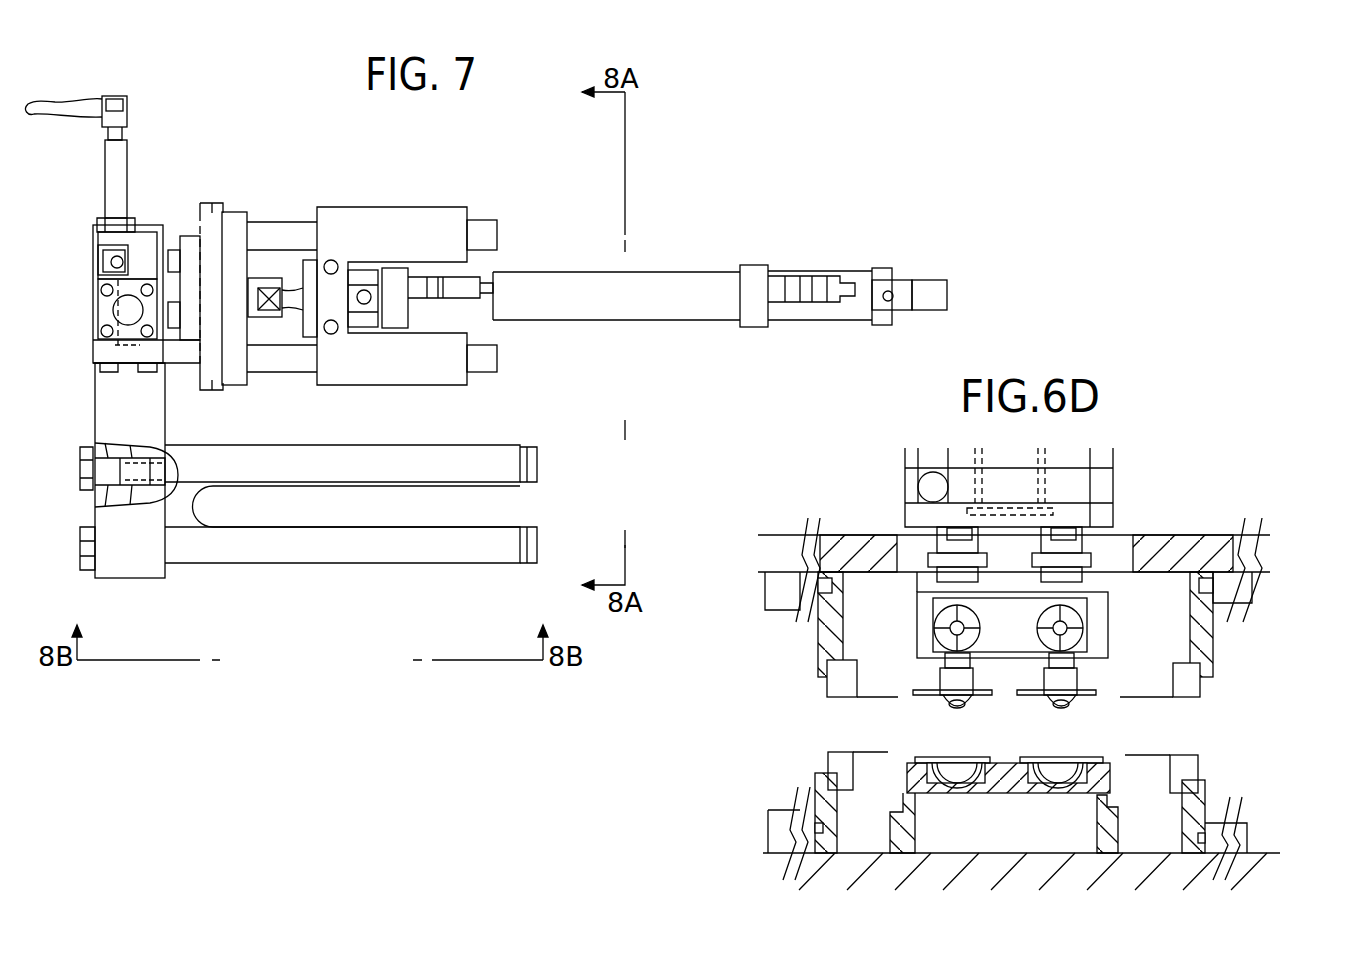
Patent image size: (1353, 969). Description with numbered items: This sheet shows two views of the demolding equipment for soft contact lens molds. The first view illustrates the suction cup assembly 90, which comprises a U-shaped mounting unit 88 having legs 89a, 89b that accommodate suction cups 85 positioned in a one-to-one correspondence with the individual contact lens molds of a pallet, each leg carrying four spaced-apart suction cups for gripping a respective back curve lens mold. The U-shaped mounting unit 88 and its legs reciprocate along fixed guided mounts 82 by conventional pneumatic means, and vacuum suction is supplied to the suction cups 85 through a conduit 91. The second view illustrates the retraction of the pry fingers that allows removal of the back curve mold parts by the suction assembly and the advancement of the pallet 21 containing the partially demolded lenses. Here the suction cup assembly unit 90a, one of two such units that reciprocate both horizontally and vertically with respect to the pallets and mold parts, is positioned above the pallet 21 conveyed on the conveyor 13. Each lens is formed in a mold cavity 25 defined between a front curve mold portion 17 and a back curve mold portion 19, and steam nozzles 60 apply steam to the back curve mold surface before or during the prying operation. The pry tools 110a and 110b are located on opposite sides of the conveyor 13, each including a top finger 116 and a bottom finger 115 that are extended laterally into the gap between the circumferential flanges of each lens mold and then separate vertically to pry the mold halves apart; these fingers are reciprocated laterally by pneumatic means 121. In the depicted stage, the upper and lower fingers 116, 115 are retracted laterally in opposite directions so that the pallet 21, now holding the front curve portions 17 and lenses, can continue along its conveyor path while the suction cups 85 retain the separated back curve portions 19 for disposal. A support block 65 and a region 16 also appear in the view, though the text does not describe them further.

In FIG. 7, the conduit 91 is at (118, 172).
In FIG. 7, the suction cup assembly 90 is at (68, 422).
In FIG. 7, the fixed guided mounts 82 is at (375, 215).
In FIG. 7, the U-shaped mounting unit 88 is at (150, 565).
In FIG. 7, the leg 89a is at (388, 458).
In FIG. 7, the leg 89b is at (385, 548).
In FIG. 6D, the support block 65 is at (1103, 490).
In FIG. 6D, the steam nozzles 60 is at (1057, 548).
In FIG. 6D, the pneumatic means 121 is at (770, 606).
In FIG. 6D, the top finger 116 is at (872, 698).
In FIG. 6D, the suction cup assembly unit 90a is at (1097, 633).
In FIG. 6D, the suction cups 85 is at (1050, 684).
In FIG. 6D, the back curve mold portion 19 is at (1048, 706).
In FIG. 6D, the front curve mold portion 17 is at (958, 766).
In FIG. 6D, the pallet 21 is at (998, 787).
In FIG. 6D, the pallet conveyor 13 is at (1092, 830).
In FIG. 6D, the bottom finger 115 is at (867, 752).
In FIG. 6D, the recess 16 is at (932, 782).
In FIG. 6D, the mold cavity 25 is at (947, 777).
In FIG. 6D, the pry tools 110a is at (776, 733).
In FIG. 6D, the pry tools 110b is at (1215, 730).